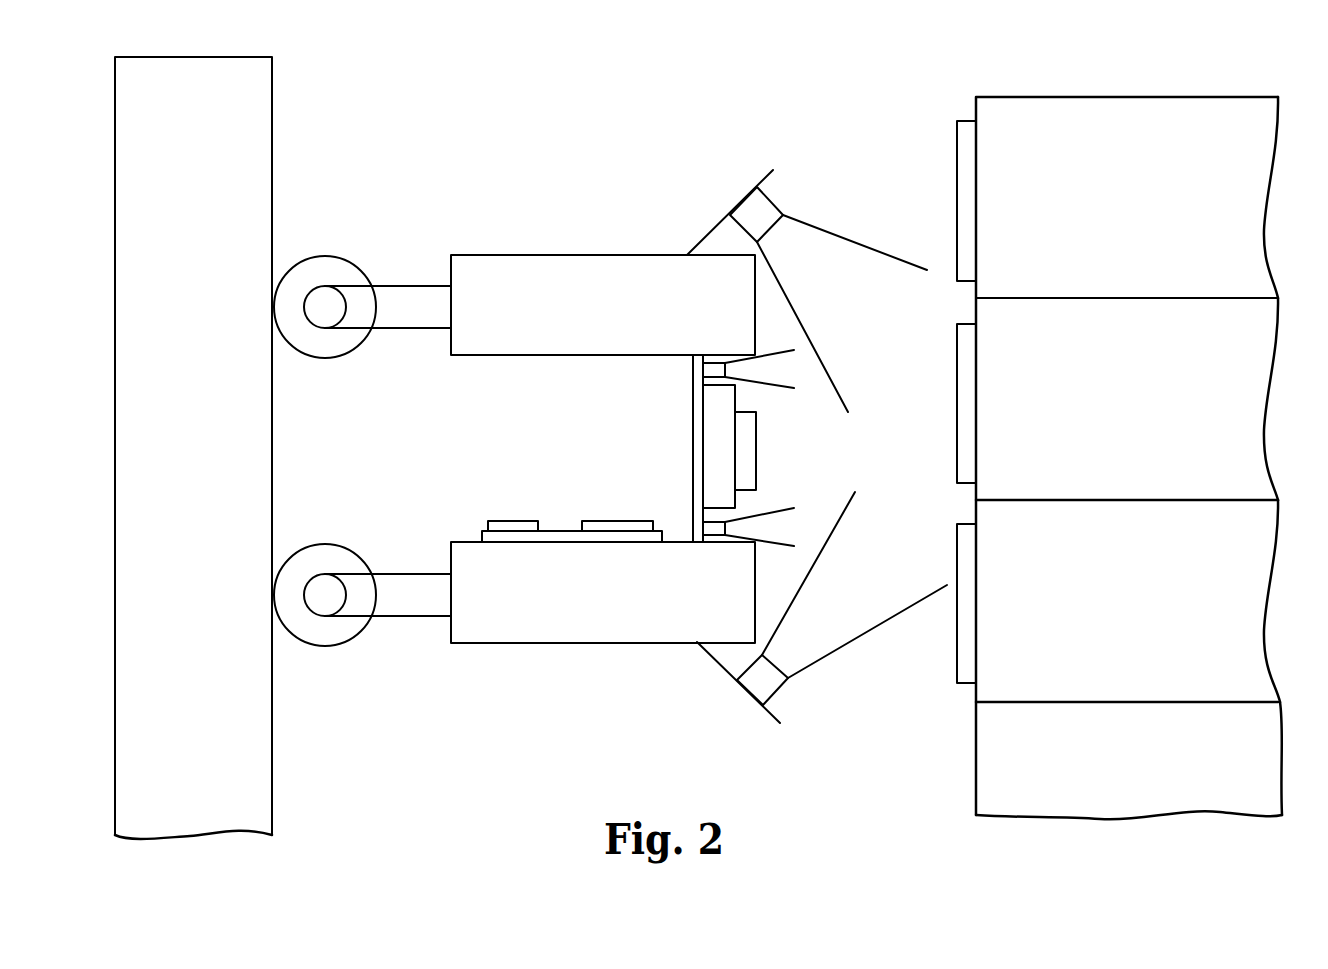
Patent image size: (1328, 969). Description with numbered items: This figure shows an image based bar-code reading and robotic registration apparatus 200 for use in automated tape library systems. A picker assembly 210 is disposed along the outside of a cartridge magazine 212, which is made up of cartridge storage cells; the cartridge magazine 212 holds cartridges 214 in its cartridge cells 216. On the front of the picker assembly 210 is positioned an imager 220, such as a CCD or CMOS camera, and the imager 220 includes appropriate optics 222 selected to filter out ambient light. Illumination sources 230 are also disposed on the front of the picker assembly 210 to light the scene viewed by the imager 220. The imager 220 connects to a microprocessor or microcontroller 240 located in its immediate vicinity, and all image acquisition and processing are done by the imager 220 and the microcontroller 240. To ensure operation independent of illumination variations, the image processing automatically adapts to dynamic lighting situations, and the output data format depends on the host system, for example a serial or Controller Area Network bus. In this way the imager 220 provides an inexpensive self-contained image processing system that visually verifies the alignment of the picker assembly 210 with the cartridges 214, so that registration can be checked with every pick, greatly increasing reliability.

The image based bar-code reading and robotic registration apparatus 200 is at (573, 109).
The picker assembly 210 is at (570, 266).
The cartridge magazine 212 is at (937, 731).
The cartridges 214 is at (957, 193).
The cartridge cells 216 is at (1142, 122).
The imager 220 is at (771, 428).
The optics 222 is at (749, 484).
The illumination sources 230 is at (753, 203).
The microcontroller 240 is at (553, 511).